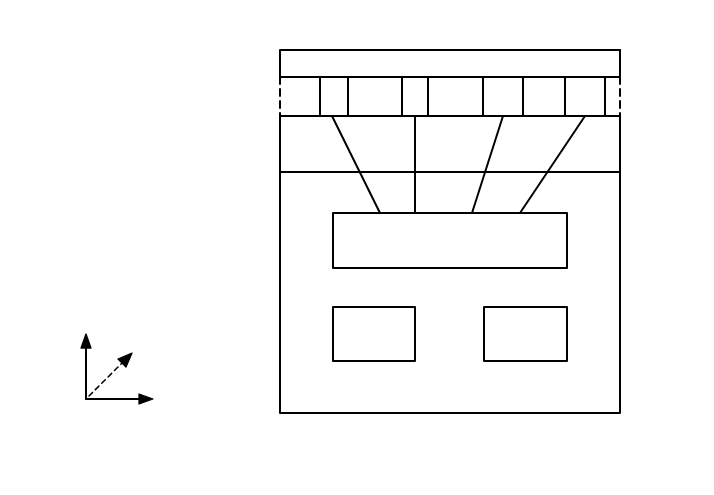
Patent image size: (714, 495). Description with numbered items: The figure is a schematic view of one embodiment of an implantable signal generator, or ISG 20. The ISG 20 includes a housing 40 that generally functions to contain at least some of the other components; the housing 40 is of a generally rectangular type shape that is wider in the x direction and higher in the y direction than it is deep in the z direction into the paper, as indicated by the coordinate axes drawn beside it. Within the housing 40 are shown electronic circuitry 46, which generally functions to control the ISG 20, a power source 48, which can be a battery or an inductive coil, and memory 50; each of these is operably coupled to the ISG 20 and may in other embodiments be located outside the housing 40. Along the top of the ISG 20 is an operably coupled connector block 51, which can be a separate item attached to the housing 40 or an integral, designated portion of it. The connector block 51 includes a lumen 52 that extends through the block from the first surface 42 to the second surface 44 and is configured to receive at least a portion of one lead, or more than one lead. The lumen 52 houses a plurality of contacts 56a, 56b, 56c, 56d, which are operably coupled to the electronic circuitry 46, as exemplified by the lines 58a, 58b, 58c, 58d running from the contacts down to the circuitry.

The implantable signal generator 20 is at (112, 58).
The housing 40 is at (614, 281).
The first surface 42 is at (279, 62).
The second surface 44 is at (622, 62).
The electronic circuitry 46 is at (339, 255).
The power source 48 is at (339, 349).
The memory 50 is at (560, 349).
The connector block 51 is at (288, 143).
The lumen 52 is at (289, 97).
The contact 56a is at (329, 118).
The contact 56b is at (412, 80).
The contact 56c is at (515, 118).
The contact 56d is at (582, 80).
The line 58a is at (368, 190).
The line 58b is at (413, 131).
The line 58c is at (490, 150).
The line 58d is at (536, 192).